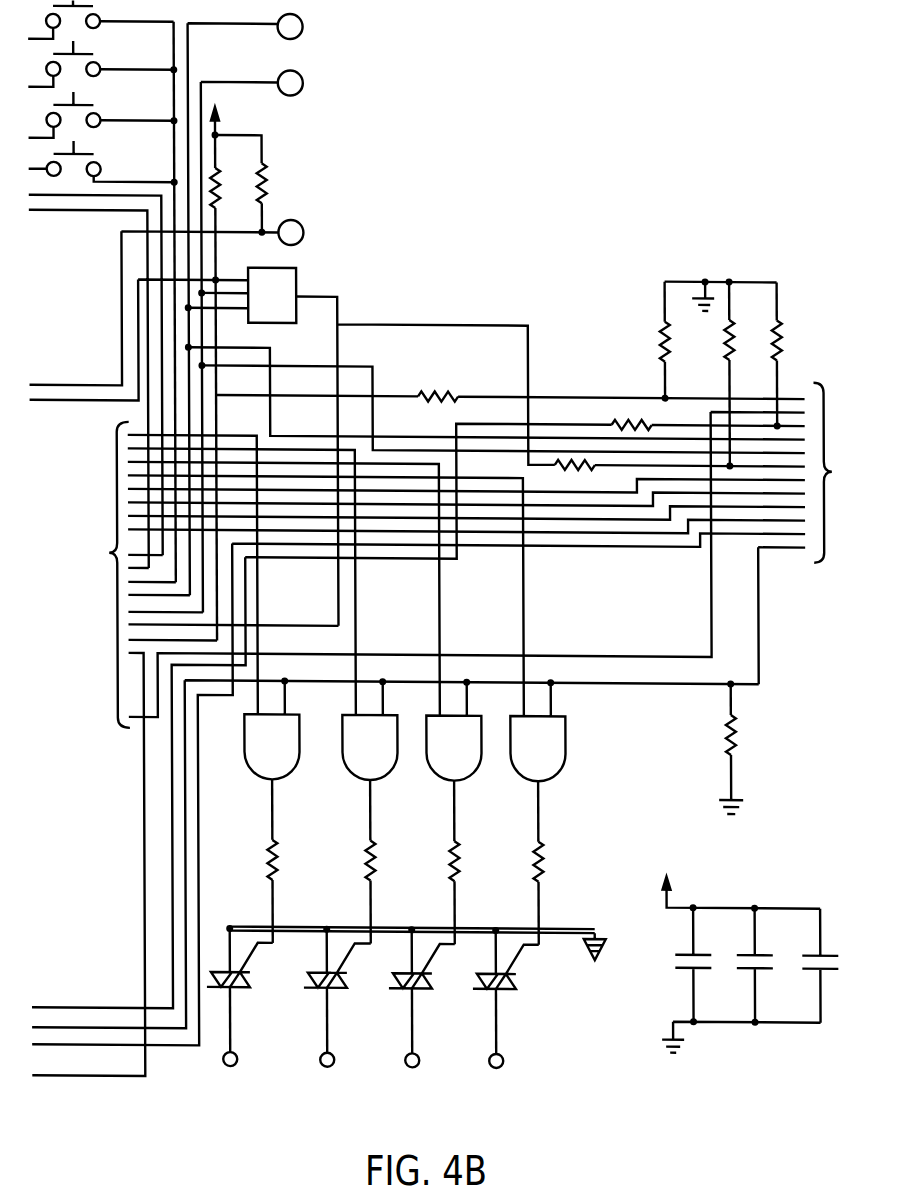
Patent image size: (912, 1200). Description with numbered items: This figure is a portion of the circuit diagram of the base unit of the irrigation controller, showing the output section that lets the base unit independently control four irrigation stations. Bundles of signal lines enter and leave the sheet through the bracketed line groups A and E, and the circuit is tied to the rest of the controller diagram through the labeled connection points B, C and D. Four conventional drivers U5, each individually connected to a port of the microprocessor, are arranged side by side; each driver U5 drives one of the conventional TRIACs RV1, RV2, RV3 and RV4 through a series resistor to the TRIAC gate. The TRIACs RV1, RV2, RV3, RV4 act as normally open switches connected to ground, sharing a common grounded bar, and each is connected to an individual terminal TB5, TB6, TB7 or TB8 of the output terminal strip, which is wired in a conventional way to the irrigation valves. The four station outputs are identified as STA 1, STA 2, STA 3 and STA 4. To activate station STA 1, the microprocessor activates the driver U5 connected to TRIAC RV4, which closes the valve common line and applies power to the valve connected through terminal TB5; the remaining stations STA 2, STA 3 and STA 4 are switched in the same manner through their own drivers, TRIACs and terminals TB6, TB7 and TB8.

The input signal line group A is at (110, 575).
The connection point B is at (166, 302).
The connection point C is at (253, 341).
The connection point D is at (246, 304).
The output signal line group E is at (830, 473).
The driver U5 is at (404, 731).
The TRIAC RV1 is at (506, 974).
The TRIAC RV2 is at (422, 974).
The TRIAC RV3 is at (337, 973).
The TRIAC RV4 is at (240, 972).
The station 1 STA 1 is at (263, 1019).
The station 2 STA 2 is at (360, 1020).
The station 3 STA 3 is at (445, 1020).
The station 4 STA 4 is at (529, 1021).
The terminal TB5 is at (249, 1066).
The terminal TB6 is at (346, 1067).
The terminal TB7 is at (431, 1067).
The terminal TB8 is at (515, 1068).